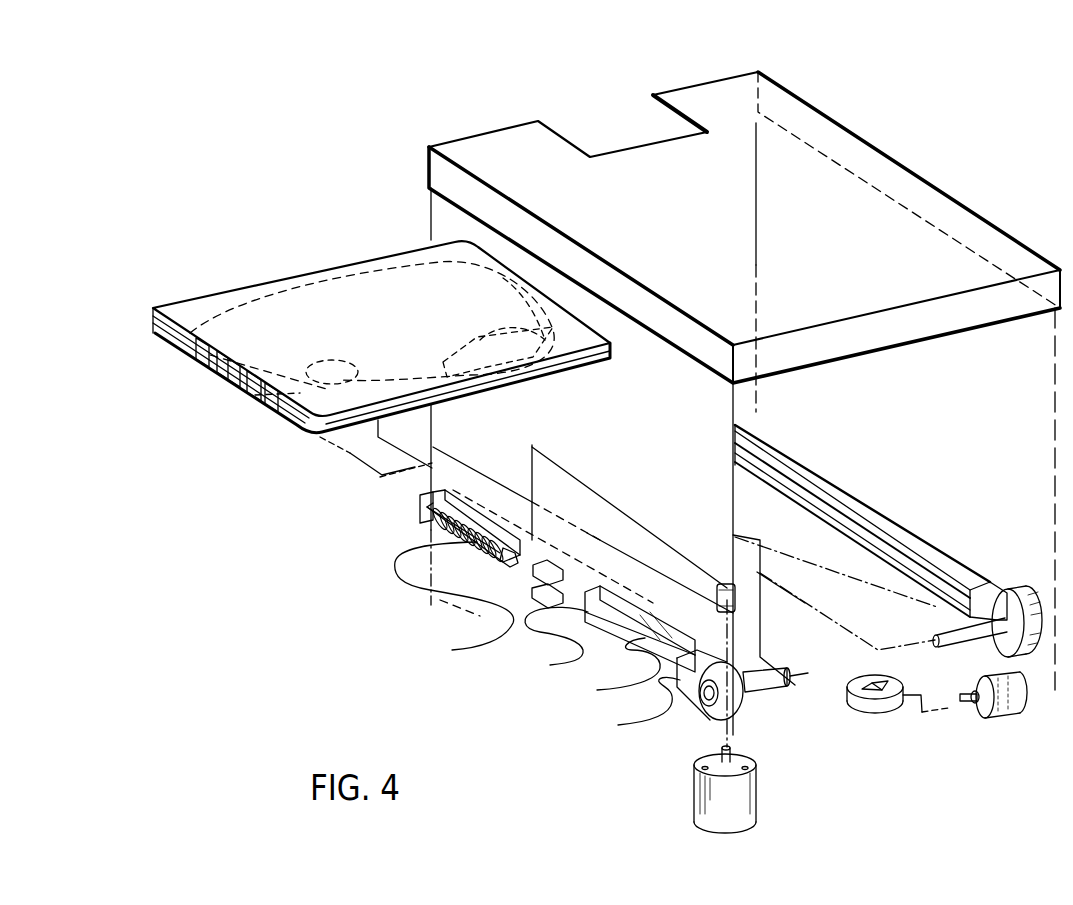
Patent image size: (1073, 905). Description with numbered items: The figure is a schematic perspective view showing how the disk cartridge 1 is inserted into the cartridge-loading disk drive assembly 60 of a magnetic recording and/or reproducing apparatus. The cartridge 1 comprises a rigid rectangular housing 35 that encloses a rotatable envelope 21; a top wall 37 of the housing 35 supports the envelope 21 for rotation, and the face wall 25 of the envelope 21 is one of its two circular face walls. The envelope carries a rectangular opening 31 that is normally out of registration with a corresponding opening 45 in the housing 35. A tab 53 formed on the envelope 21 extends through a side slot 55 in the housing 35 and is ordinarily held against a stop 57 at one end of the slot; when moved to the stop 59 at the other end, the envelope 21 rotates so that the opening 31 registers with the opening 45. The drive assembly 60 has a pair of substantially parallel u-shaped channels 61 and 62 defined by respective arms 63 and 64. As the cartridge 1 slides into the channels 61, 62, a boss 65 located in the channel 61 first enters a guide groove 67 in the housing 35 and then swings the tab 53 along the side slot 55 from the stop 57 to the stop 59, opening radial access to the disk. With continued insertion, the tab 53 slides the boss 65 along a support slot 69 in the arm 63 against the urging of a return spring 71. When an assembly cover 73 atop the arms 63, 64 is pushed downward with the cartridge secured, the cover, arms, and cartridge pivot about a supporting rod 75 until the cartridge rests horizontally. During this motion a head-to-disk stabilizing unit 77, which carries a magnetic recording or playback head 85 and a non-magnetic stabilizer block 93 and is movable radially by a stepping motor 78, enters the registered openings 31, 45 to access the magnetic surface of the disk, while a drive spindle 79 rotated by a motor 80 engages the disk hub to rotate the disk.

The disk cartridge 1 is at (151, 309).
The envelope 21 is at (375, 272).
The face wall 25 is at (512, 281).
The opening 31 is at (610, 350).
The housing 35 is at (322, 262).
The top wall 37 is at (200, 300).
The opening 45 is at (342, 360).
The tab 53 is at (244, 384).
The side slot 55 is at (214, 358).
The stop 57 is at (271, 394).
The stop 59 is at (193, 350).
The cartridge-loading disk drive assembly 60 is at (962, 545).
The channel 61 is at (556, 619).
The channel 62 is at (810, 482).
The arm 63 is at (672, 696).
The arm 64 is at (800, 448).
The boss 65 is at (520, 553).
The guide groove 67 is at (292, 428).
The support slot 69 is at (628, 648).
The return spring 71 is at (454, 603).
The assembly cover 73 is at (900, 201).
The supporting rod 75 is at (745, 700).
The head-to-disk stabilizing unit 77 is at (847, 698).
The stepping motor 78 is at (1046, 690).
The drive spindle 79 is at (715, 605).
The motor 80 is at (700, 814).
The magnetic recording or playback head 85 is at (870, 684).
The stabilizer block 93 is at (880, 702).